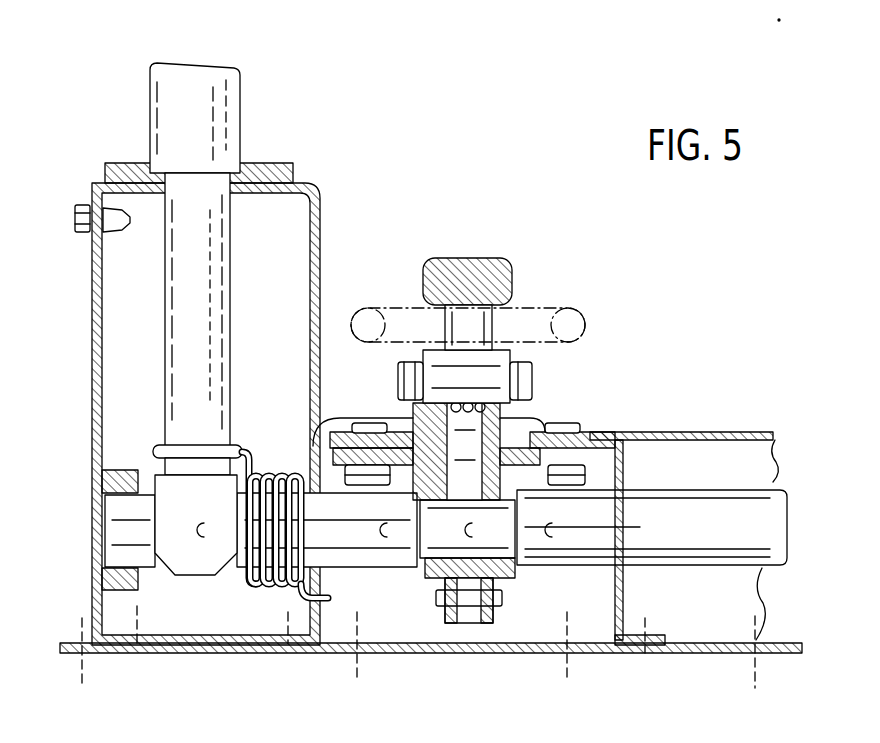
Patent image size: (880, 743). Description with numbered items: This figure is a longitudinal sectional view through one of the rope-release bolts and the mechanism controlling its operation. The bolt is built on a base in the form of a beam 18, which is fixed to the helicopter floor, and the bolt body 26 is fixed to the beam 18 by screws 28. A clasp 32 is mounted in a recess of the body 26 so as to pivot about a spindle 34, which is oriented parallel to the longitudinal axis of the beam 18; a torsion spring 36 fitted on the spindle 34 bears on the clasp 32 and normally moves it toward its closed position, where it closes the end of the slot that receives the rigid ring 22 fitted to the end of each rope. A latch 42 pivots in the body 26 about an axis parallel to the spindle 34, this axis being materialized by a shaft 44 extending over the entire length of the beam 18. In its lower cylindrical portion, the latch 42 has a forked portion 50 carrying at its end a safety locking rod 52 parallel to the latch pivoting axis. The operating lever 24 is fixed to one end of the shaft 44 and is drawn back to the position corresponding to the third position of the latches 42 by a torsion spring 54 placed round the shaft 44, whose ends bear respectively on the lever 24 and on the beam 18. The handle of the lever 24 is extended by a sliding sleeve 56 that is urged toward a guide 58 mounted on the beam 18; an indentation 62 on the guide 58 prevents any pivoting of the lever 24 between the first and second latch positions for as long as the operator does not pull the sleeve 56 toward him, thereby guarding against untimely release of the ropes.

The beam 18 is at (718, 436).
The rigid ring 22 is at (585, 310).
The operating lever 24 is at (163, 383).
The body 26 is at (500, 456).
The screws 28 is at (340, 427).
The clasp 32 is at (478, 324).
The spindle 34 is at (500, 384).
The torsion spring 36 is at (458, 345).
The latch 42 is at (425, 456).
The shaft 44 is at (662, 506).
The forked portion 50 is at (445, 585).
The safety locking rod 52 is at (470, 600).
The torsion spring 54 is at (263, 577).
The sliding sleeve 56 is at (165, 110).
The guide 58 is at (318, 205).
The indentation 62 is at (262, 166).